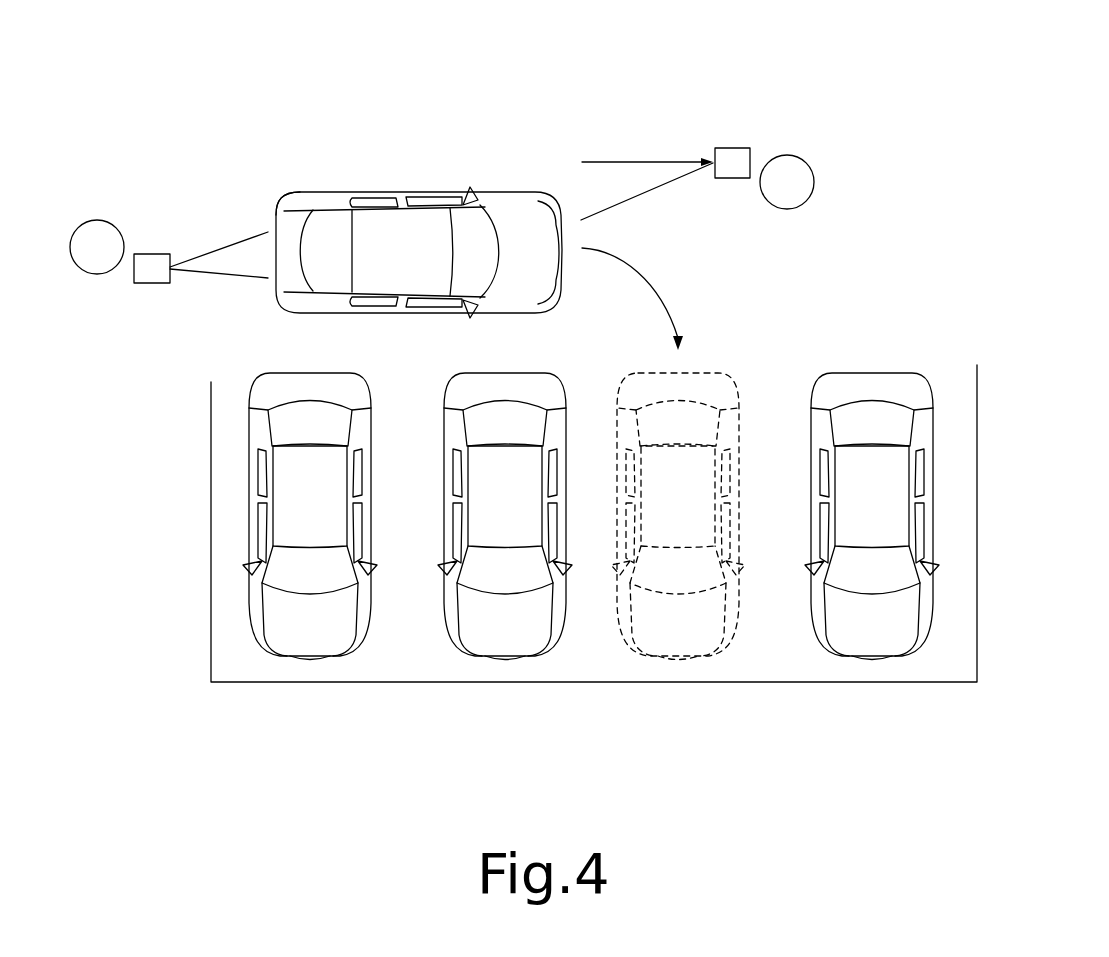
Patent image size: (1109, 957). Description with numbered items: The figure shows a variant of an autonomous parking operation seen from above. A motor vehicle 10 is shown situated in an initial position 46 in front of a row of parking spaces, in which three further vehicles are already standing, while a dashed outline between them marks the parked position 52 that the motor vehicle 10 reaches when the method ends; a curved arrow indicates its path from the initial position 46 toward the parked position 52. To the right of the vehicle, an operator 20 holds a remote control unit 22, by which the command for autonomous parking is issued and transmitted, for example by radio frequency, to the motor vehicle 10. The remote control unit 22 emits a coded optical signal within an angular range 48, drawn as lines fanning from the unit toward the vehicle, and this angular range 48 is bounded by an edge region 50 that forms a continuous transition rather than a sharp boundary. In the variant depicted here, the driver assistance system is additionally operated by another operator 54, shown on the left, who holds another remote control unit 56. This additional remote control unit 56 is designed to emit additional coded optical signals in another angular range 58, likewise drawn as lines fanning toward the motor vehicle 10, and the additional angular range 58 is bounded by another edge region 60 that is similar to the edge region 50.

The motor vehicle 10 is at (392, 170).
The operator 20 is at (807, 163).
The remote control unit 22 is at (747, 127).
The initial position 46 is at (280, 193).
The angular range 48 is at (660, 173).
The edge region 50 is at (603, 162).
The parked position 52 is at (680, 660).
The another operator 54 is at (105, 220).
The another remote control unit 56 is at (150, 283).
The another angular range 58 is at (230, 263).
The another edge region 60 is at (192, 262).